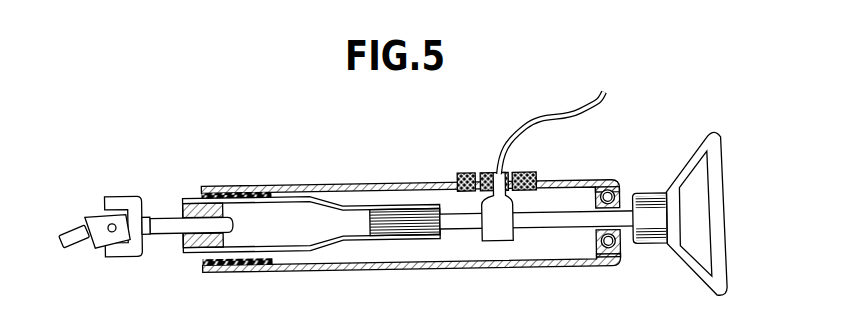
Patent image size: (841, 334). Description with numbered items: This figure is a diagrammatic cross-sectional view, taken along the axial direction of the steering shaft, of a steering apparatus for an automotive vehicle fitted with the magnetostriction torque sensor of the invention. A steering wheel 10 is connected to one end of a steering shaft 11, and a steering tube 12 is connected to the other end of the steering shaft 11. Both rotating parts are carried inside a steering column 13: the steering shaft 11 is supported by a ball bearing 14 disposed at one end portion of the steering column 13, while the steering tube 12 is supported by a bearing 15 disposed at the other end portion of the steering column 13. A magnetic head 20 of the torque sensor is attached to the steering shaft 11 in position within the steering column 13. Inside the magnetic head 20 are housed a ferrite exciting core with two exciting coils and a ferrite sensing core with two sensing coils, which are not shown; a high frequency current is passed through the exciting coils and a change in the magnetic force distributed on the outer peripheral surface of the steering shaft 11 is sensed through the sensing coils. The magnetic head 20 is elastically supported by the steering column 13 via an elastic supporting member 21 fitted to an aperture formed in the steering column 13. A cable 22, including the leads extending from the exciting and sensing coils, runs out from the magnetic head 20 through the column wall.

The steering wheel 10 is at (722, 182).
The steering shaft 11 is at (563, 212).
The steering tube 12 is at (288, 200).
The steering column 13 is at (578, 182).
The ball bearing 14 is at (623, 252).
The bearing 15 is at (203, 192).
The magnetic head 20 is at (492, 222).
The elastic supporting member 21 is at (490, 174).
The cable 22 is at (550, 128).